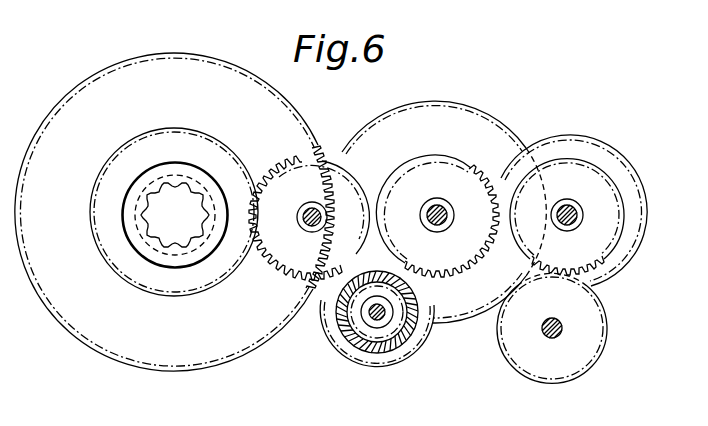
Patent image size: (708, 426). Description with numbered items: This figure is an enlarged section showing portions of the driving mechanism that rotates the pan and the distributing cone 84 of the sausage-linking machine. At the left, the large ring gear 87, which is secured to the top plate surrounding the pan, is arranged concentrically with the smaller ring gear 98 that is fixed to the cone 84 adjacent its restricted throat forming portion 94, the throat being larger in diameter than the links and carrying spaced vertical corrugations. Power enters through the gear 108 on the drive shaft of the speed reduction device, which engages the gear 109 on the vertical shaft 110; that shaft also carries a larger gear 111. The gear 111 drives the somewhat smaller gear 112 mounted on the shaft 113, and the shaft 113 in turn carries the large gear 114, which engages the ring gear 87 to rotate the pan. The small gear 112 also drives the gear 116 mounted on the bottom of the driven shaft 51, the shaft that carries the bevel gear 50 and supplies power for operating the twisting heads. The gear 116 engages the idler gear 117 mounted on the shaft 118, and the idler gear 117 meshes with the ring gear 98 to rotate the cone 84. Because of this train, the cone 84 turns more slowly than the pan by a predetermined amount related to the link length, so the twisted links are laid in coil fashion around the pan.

The bevel gear 50 is at (400, 333).
The driven shaft 51 is at (362, 295).
The distributing cone 84 is at (176, 163).
The ring gear 87 is at (187, 372).
The throat forming portion 94 is at (201, 209).
The ring gear 98 is at (175, 297).
The gear 108 is at (596, 325).
The gear 109 is at (620, 203).
The vertical shaft 110 is at (567, 199).
The larger gear 111 is at (573, 135).
The gear 112 is at (429, 158).
The shaft 113 is at (437, 233).
The large gear 114 is at (491, 113).
The gear 116 is at (389, 369).
The idler gear 117 is at (324, 155).
The shaft 118 is at (303, 206).